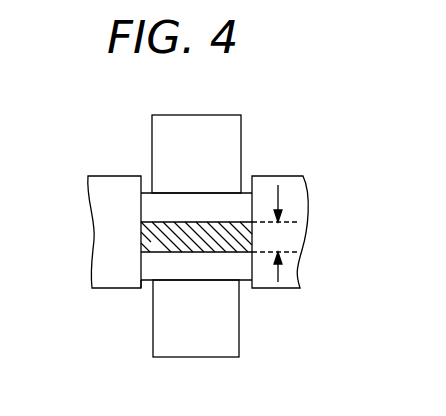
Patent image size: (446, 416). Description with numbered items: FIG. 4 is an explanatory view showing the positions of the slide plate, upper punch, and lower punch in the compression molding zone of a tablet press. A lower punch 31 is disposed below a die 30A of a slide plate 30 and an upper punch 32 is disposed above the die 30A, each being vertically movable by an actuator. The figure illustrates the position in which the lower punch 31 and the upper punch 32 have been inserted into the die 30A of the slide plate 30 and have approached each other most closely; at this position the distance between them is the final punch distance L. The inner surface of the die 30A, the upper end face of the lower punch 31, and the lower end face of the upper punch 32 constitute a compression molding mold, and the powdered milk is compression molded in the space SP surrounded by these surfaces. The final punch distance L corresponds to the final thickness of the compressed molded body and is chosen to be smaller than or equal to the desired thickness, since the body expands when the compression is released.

The slide plate 30 is at (272, 184).
The die 30A is at (143, 288).
The lower punch 31 is at (240, 313).
The upper punch 32 is at (152, 158).
The space SP is at (142, 248).
The final punch distance L is at (275, 233).